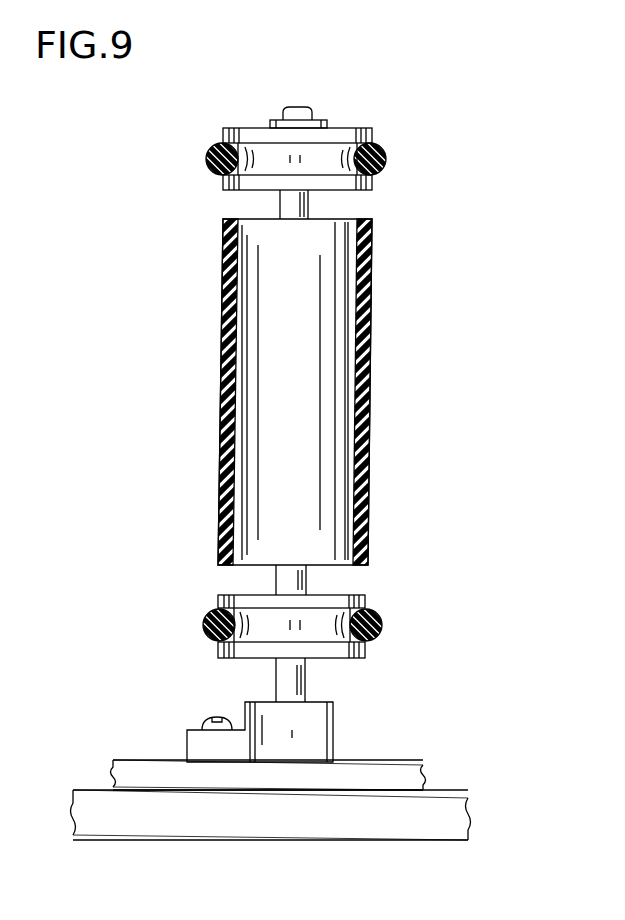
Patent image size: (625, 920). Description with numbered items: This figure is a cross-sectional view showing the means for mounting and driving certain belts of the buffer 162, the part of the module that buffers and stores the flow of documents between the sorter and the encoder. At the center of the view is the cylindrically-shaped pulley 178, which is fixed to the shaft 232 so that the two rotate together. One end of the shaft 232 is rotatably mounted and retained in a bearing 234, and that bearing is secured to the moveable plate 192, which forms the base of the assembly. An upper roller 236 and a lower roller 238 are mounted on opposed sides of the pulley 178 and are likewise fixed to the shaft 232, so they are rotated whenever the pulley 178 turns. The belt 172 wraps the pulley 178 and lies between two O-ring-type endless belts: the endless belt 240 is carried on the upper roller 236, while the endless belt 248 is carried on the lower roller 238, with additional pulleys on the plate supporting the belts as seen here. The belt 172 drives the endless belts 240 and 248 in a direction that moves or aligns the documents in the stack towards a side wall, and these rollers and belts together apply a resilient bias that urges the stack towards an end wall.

The buffer 162 is at (453, 813).
The moveable plate 192 is at (410, 770).
The bearing 234 is at (331, 713).
The lower roller 238 is at (370, 598).
The endless belt 248 is at (380, 628).
The belt 172 is at (357, 371).
The pulley 178 is at (340, 312).
The upper roller 236 is at (372, 131).
The endless belt 240 is at (386, 162).
The shaft 232 is at (303, 106).